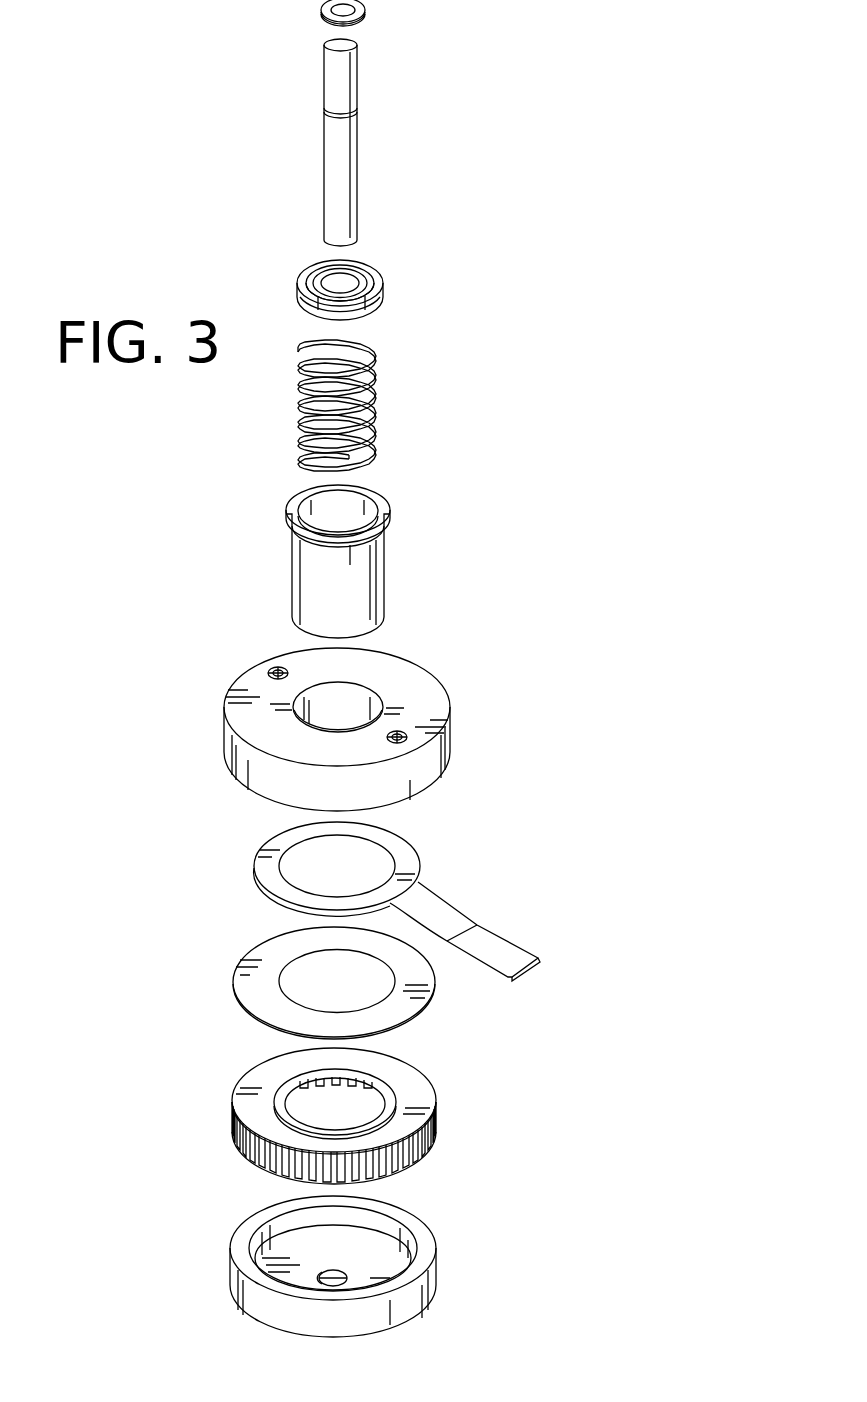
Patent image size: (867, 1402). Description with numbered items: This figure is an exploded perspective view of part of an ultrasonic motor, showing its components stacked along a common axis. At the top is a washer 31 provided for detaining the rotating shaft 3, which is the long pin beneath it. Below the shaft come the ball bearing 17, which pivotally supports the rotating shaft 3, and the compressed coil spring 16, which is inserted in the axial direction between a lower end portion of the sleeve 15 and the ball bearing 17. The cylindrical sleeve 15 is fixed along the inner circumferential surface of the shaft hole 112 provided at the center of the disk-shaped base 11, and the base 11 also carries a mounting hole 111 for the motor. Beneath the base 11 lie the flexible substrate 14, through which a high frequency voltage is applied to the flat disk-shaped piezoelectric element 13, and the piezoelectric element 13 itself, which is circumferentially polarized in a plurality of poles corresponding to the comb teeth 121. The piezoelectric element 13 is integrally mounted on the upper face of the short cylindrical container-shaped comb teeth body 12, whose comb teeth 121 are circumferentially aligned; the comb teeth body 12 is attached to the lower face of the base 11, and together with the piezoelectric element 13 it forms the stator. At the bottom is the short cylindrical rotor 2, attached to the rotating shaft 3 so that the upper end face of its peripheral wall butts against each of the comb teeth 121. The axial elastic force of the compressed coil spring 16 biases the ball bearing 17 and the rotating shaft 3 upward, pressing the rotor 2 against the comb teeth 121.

The rotor 2 is at (423, 1288).
The rotating shaft 3 is at (327, 147).
The washer 31 is at (365, 13).
The base 11 is at (346, 712).
The mounting hole 111 is at (407, 736).
The shaft hole 112 is at (360, 697).
The comb teeth body 12 is at (351, 1116).
The comb teeth 121 is at (427, 1157).
The piezoelectric element 13 is at (243, 990).
The flexible substrate 14 is at (438, 913).
The sleeve 15 is at (307, 577).
The compressed coil spring 16 is at (378, 408).
The ball bearing 17 is at (383, 290).